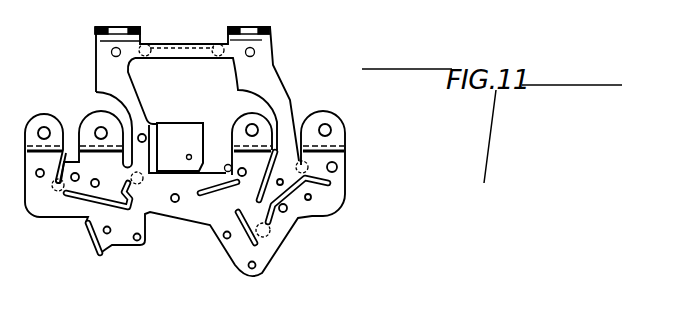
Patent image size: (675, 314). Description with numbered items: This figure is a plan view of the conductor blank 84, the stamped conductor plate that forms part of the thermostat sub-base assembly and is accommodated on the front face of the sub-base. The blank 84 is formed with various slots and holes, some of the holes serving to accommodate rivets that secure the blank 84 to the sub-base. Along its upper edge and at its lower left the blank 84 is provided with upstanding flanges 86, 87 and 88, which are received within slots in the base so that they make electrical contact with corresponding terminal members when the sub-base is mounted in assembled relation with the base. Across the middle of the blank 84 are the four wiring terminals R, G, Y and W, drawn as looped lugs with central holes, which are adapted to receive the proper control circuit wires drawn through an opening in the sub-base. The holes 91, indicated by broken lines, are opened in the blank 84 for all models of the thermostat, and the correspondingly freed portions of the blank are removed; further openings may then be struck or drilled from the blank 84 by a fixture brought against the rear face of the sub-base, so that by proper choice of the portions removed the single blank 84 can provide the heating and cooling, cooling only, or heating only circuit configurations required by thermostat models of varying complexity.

The conductor blank 84 is at (283, 71).
The upstanding flange 86 is at (100, 40).
The upstanding flange 87 is at (264, 40).
The upstanding flange 88 is at (87, 242).
The holes 91 is at (181, 47).
The wiring terminal R is at (44, 117).
The wiring terminal G is at (100, 117).
The wiring terminal Y is at (252, 116).
The wiring terminal W is at (325, 116).